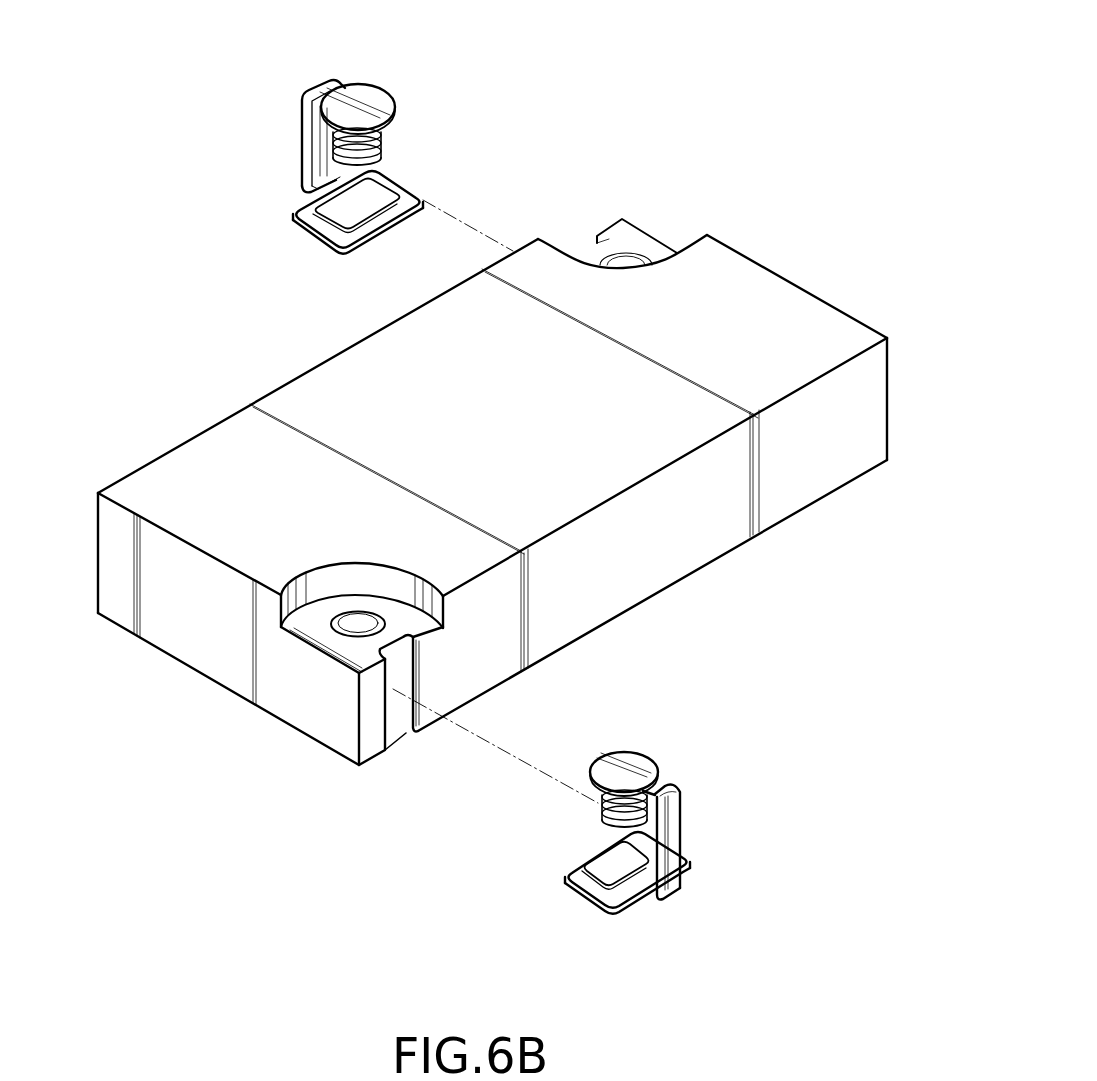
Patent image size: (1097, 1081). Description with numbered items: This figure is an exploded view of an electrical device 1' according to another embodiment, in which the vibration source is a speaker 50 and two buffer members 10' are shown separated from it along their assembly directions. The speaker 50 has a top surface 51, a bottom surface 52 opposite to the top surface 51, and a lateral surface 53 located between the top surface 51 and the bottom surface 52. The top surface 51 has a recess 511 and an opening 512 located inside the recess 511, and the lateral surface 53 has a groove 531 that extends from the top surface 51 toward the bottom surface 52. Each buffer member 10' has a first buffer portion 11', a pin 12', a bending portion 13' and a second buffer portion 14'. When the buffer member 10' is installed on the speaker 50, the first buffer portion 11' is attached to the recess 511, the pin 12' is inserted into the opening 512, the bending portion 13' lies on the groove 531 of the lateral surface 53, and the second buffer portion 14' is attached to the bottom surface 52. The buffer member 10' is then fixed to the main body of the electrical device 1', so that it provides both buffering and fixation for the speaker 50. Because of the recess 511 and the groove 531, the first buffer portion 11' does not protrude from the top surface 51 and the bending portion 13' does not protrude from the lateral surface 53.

The electrical device 1' is at (497, 477).
The buffer member 10' is at (505, 505).
The first buffer portion 11' is at (619, 748).
The pin 12' is at (603, 820).
The bending portion 13' is at (712, 841).
The second buffer portion 14' is at (606, 883).
The speaker 50 is at (492, 464).
The top surface 51 is at (780, 308).
The bottom surface 52 is at (790, 520).
The lateral surface 53 is at (596, 571).
The recess 511 is at (297, 628).
The opening 512 is at (357, 626).
The groove 531 is at (585, 252).